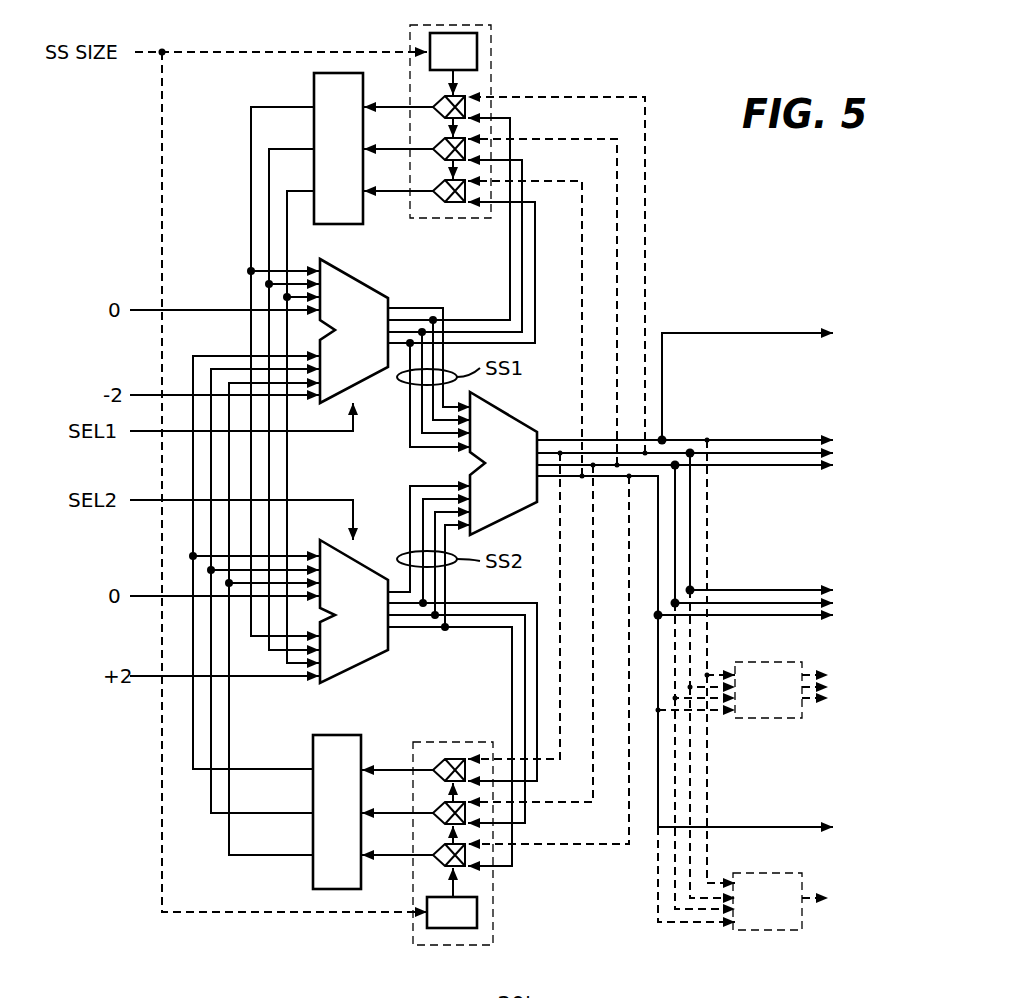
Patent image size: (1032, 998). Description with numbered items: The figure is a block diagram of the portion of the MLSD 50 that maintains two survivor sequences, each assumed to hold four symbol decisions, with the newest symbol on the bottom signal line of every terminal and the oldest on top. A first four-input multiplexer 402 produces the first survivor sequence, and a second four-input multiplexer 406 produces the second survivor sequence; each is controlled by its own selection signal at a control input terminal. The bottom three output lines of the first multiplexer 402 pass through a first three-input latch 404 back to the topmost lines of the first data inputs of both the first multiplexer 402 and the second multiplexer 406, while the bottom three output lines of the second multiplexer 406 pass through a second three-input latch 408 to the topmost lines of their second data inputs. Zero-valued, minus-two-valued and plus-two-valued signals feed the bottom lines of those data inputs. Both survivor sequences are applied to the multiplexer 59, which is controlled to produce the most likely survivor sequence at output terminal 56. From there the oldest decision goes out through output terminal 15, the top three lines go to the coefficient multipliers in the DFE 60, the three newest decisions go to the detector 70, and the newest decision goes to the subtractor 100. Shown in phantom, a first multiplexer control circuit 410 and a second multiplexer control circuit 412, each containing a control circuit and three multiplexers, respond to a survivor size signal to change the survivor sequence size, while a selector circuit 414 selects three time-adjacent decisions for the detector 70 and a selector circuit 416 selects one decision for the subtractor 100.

The MLSD 50 is at (622, 50).
The output terminal 15 is at (834, 330).
The output terminal 56 is at (716, 421).
The multiplexer 59 is at (498, 405).
The DFE 60 is at (876, 468).
The detector 70 is at (885, 653).
The subtractor 100 is at (879, 870).
The first four-input multiplexer 402 is at (360, 282).
The first three-input latch 404 is at (338, 224).
The second four-input multiplexer 406 is at (372, 657).
The second three-input latch 408 is at (335, 735).
The first multiplexer control circuit 410 is at (410, 30).
The second multiplexer control circuit 412 is at (465, 742).
The selector circuit 414 is at (785, 662).
The selector circuit 416 is at (785, 873).